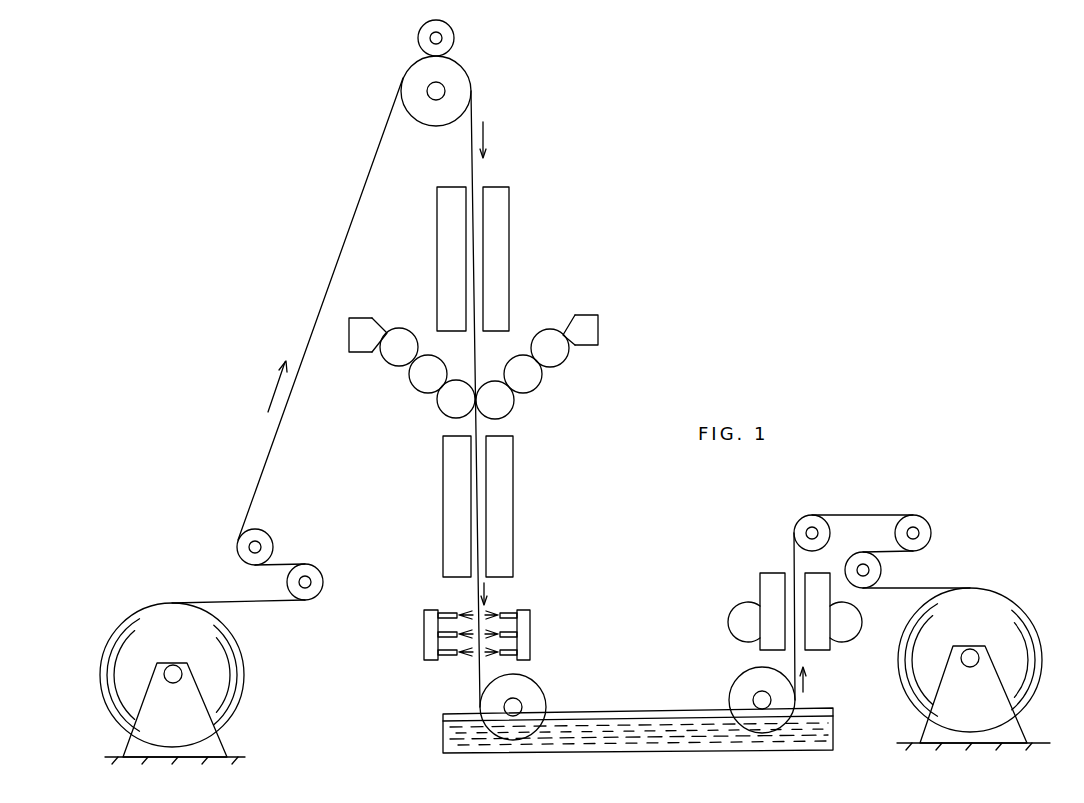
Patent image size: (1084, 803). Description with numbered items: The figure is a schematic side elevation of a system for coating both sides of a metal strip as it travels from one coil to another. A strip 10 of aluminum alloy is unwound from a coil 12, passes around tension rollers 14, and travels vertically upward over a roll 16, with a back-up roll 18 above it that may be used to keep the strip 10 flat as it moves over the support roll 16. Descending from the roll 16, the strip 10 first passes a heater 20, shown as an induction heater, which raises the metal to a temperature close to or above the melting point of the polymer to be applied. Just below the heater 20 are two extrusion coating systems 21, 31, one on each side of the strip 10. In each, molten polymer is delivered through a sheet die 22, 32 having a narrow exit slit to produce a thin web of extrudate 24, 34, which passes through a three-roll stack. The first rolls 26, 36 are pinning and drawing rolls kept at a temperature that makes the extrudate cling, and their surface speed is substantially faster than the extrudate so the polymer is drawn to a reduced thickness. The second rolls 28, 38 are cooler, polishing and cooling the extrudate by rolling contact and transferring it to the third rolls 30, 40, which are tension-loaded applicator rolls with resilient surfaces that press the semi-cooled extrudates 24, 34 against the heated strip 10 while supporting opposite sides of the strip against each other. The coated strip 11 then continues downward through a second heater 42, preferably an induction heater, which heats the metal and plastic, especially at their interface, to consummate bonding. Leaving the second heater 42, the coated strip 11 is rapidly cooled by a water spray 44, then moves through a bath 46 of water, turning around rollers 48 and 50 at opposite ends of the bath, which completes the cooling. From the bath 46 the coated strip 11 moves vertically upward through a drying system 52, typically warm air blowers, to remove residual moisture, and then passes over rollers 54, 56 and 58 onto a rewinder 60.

The strip 10 is at (233, 600).
The coated strip of metal 11 is at (855, 513).
The coil 12 is at (108, 645).
The tension rollers 14 is at (300, 566).
The roll 16 is at (433, 124).
The back-up roll 18 is at (420, 37).
The heater 20 is at (508, 196).
The extrusion coating system 21 is at (404, 385).
The sheet die 22 is at (370, 318).
The web of extrudate 24 is at (387, 331).
The first roll 26 is at (393, 360).
The second roll 28 is at (421, 386).
The third roll 30 is at (452, 411).
The extrusion coating system 31 is at (545, 381).
The sheet die 32 is at (600, 323).
The web of extrudate 34 is at (562, 334).
The first roll 36 is at (560, 360).
The second roll 38 is at (530, 383).
The third roll 40 is at (503, 404).
The second heater 42 is at (515, 518).
The water spray 44 is at (530, 619).
The bath 46 is at (608, 708).
The roller 48 is at (532, 687).
The roller 50 is at (743, 683).
The drying system 52 is at (768, 572).
The roller 54 is at (807, 523).
The roller 56 is at (917, 520).
The roller 58 is at (875, 570).
The rewinder 60 is at (1032, 621).